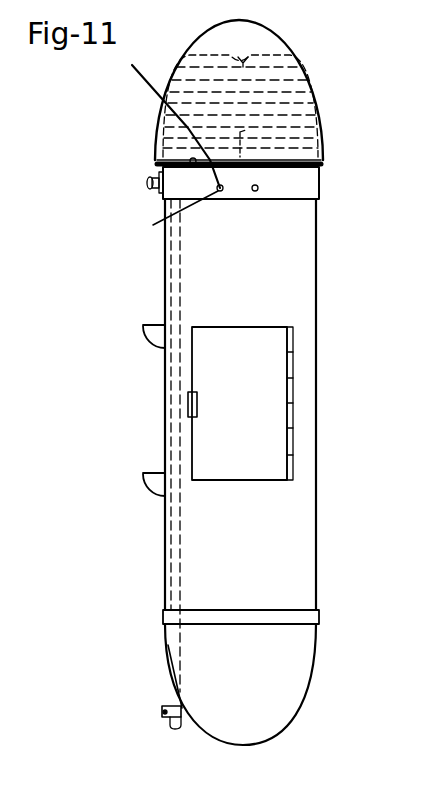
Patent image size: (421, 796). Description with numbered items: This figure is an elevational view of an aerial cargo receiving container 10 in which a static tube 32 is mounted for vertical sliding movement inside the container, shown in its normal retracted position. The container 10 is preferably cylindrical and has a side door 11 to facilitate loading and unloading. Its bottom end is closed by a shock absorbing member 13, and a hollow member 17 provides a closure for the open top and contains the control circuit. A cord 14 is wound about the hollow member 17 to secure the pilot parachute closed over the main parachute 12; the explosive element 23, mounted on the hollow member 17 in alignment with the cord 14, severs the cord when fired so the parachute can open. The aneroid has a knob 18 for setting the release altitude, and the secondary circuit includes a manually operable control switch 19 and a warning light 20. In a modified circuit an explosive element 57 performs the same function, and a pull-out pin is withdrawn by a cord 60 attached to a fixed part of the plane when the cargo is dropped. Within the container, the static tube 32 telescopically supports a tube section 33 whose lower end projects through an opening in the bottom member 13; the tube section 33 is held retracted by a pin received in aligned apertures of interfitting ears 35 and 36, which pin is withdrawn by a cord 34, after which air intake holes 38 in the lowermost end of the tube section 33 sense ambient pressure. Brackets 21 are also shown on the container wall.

The cargo receiving container 10 is at (317, 403).
The side door 11 is at (250, 338).
The parachute 12 is at (300, 65).
The shock absorbing member 13 is at (313, 667).
The cord 14 is at (320, 158).
The hollow member 17 is at (293, 193).
The knob 18 is at (150, 187).
The manually operable control switch 19 is at (171, 214).
The warning light 20 is at (261, 188).
The bracket 21 is at (145, 325).
The explosive element 23 is at (157, 164).
The static tube 32 is at (172, 700).
The tube section 33 is at (182, 712).
The cord 34 is at (164, 712).
The ear 35 is at (163, 704).
The ear 36 is at (163, 714).
The air intake holes 38 is at (170, 729).
The explosive element 57 is at (193, 164).
The cord 60 is at (141, 74).